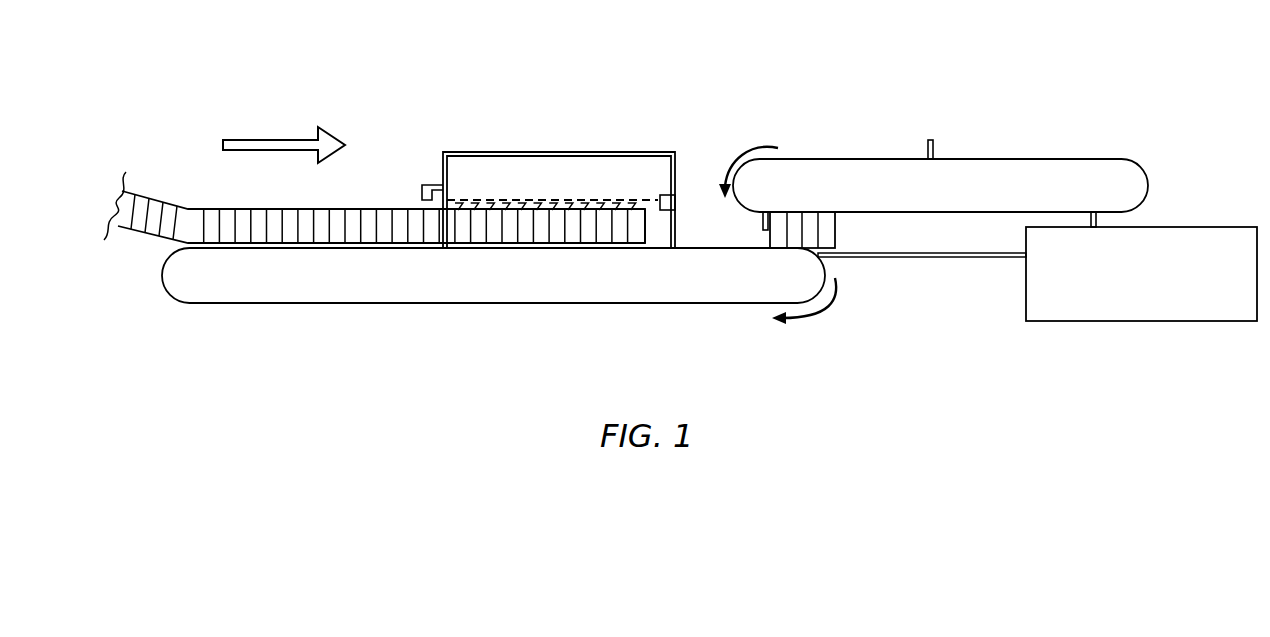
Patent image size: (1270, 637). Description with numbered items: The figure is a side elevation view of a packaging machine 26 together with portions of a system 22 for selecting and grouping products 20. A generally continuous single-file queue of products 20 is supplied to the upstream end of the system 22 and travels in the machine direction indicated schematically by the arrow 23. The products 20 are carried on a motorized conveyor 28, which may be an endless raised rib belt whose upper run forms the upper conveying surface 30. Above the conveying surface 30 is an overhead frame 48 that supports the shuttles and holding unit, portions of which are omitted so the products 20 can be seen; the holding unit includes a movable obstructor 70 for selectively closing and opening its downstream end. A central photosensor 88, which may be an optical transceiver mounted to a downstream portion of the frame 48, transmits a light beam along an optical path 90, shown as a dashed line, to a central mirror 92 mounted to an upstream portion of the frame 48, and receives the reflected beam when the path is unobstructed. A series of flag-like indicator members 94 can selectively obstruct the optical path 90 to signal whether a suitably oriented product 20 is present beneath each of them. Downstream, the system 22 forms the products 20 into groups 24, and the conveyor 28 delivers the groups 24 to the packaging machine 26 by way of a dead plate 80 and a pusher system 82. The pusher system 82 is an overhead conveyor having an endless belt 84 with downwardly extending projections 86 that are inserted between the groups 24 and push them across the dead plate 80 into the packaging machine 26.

The products 20 is at (150, 236).
The system 22 is at (449, 86).
The arrow 23 is at (280, 138).
The groups 24 is at (846, 227).
The packaging machine 26 is at (1200, 321).
The motorized conveyor 28 is at (315, 305).
The upper conveying surface 30 is at (700, 248).
The overhead frame 48 is at (565, 152).
The obstructor 70 is at (648, 232).
The dead plate 80 is at (955, 258).
The pusher system 82 is at (1013, 150).
The endless belt 84 is at (1075, 158).
The projections 86 is at (934, 142).
The central photosensor 88 is at (668, 152).
The optical path 90 is at (640, 195).
The central mirror 92 is at (422, 190).
The indicator members 94 is at (550, 198).